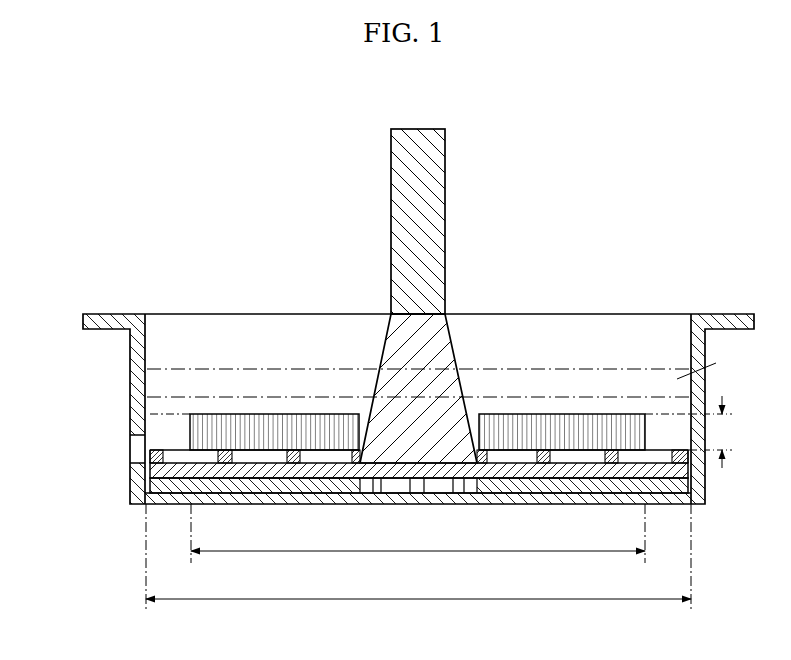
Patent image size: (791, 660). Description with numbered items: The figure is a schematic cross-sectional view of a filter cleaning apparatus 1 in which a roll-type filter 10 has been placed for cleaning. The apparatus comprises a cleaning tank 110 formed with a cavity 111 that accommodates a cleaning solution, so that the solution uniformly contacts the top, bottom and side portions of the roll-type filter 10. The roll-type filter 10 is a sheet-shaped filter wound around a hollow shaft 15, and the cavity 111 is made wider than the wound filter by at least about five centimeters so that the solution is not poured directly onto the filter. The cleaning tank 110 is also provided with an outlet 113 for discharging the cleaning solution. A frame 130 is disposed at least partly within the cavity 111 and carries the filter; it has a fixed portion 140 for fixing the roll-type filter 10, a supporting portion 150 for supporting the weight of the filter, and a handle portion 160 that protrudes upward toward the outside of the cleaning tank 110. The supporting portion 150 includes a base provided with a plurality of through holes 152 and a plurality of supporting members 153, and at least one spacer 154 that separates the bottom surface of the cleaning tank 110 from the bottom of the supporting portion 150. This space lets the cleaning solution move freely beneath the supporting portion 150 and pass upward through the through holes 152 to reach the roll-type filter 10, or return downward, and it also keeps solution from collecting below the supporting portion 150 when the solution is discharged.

The filter cleaning apparatus 1 is at (617, 119).
The roll-type filter 10 is at (225, 408).
The hollow shaft 15 is at (356, 412).
The cleaning tank 110 is at (126, 359).
The cavity 111 is at (562, 350).
The outlet 113 is at (138, 448).
The frame 130 is at (478, 243).
The fixed portion 140 is at (452, 377).
The supporting portion 150 is at (140, 482).
The through holes 152 is at (280, 473).
The supporting members 153 is at (158, 455).
The spacer 154 is at (155, 496).
The handle portion 160 is at (403, 157).